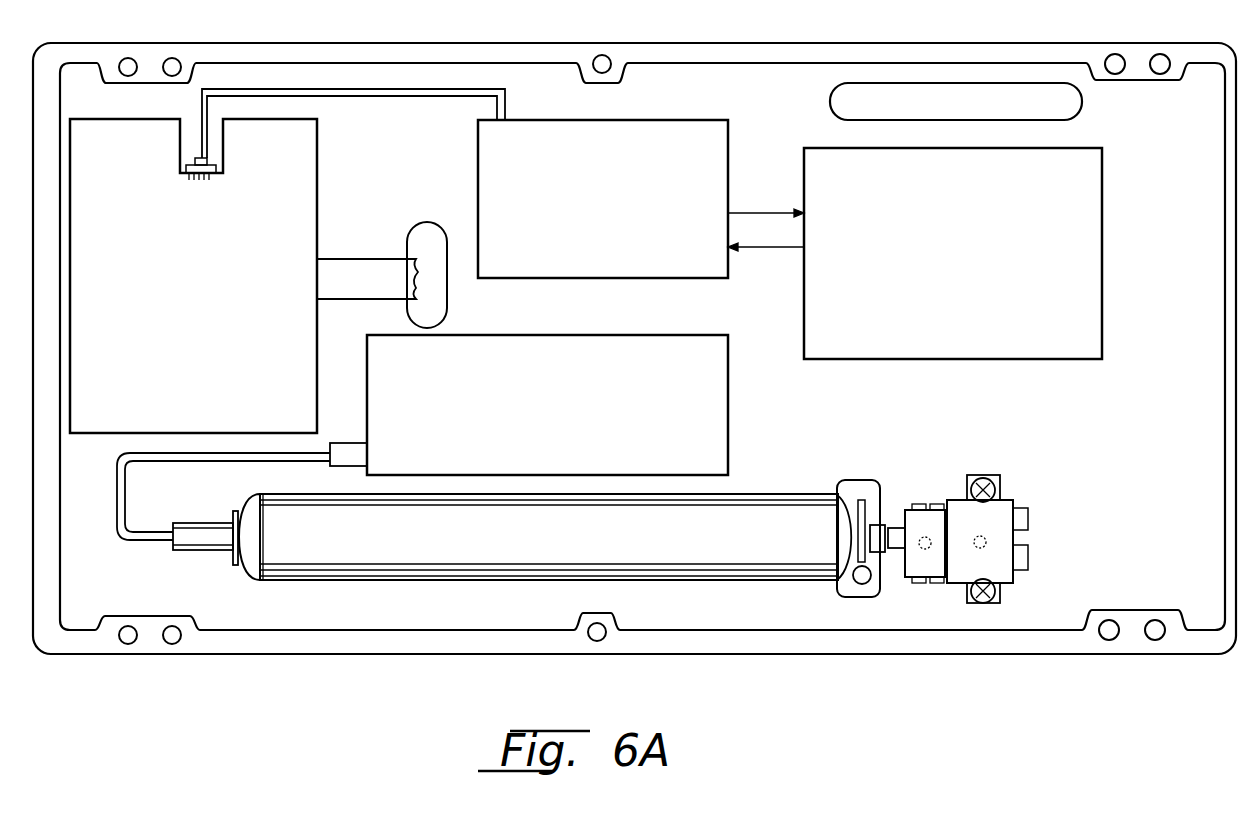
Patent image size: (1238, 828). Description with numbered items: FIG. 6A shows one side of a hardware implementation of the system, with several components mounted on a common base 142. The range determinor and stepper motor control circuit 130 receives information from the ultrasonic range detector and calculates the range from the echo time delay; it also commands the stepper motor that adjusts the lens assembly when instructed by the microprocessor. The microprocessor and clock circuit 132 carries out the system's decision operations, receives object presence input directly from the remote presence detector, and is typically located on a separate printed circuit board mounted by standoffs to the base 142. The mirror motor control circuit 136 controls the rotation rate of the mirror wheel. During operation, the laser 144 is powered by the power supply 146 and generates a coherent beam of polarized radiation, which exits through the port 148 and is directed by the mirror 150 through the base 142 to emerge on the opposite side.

The range determiner and stepper motor control circuit 130 is at (1075, 148).
The microprocessor and clock circuit 132 is at (700, 120).
The mirror motor control circuit 136 is at (320, 130).
The housing 142 is at (960, 43).
The laser 144 is at (666, 588).
The laser power supply 146 is at (697, 335).
The connector 148 is at (893, 525).
The stepper motor 150 is at (1000, 500).